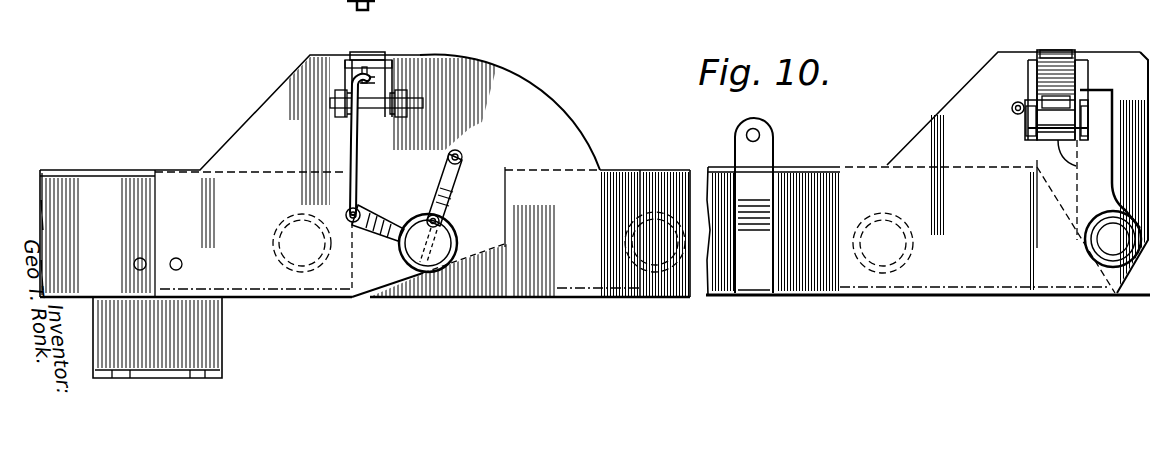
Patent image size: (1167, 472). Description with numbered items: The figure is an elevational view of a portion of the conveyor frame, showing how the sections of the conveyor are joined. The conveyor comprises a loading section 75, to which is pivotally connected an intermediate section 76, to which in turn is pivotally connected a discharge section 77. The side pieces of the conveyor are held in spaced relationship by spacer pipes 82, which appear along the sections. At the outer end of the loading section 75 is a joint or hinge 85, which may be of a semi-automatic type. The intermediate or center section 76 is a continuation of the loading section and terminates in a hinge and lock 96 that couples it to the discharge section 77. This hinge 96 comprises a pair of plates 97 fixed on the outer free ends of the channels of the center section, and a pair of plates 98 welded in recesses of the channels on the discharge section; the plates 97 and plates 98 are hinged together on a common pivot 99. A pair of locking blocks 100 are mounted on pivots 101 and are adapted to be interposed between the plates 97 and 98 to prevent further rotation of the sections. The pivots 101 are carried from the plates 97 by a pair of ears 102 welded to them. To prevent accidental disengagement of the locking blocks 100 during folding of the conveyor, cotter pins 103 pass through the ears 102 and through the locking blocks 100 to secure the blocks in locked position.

The loading section 75 is at (121, 157).
The intermediate section 76 is at (690, 153).
The discharge section 77 is at (1121, 50).
The spacer pipes 82 is at (274, 237).
The joint or hinge 85 is at (519, 66).
The hinge and lock 96 is at (1040, 46).
The plates 97 is at (1000, 126).
The plates 98 is at (1112, 154).
The common pivot 99 is at (1105, 245).
The locking blocks 100 is at (1056, 56).
The pivots 101 is at (1076, 166).
The ears 102 is at (1090, 120).
The cotter pins 103 is at (1062, 103).